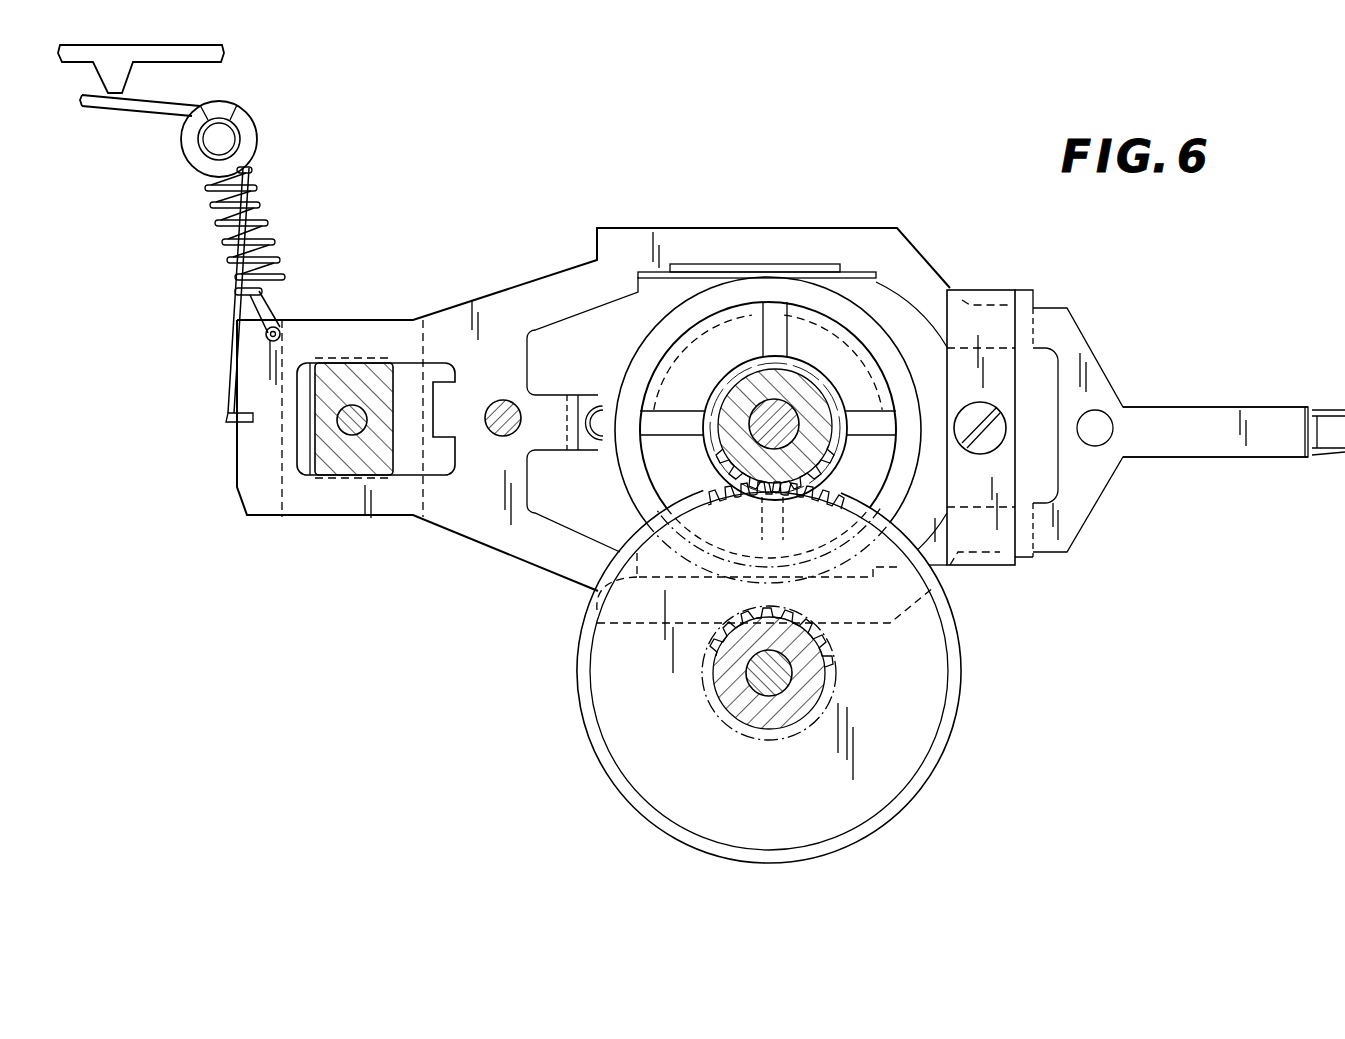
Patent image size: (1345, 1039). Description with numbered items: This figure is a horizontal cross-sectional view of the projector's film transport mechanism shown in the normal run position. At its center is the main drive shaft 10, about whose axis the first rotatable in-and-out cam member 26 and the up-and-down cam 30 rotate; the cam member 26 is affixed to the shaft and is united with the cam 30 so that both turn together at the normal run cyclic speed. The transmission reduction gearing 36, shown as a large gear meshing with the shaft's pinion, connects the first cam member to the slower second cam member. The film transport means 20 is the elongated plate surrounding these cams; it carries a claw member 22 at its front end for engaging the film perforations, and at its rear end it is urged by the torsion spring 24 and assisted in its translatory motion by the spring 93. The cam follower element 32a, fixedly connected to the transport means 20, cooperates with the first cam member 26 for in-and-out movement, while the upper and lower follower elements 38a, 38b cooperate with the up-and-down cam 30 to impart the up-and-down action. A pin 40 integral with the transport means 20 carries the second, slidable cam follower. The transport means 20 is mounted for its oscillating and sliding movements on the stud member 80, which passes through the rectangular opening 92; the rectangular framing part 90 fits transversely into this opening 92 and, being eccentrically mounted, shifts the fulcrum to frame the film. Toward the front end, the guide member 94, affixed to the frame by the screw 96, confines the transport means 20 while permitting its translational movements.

The main drive shaft 10 is at (778, 424).
The film transport means 20 is at (907, 272).
The claw member 22 is at (1323, 407).
The torsion spring 24 is at (147, 107).
The first rotatable in-and-out cam member 26 is at (863, 372).
The up-and-down cam 30 is at (740, 290).
The cam follower element 32a is at (597, 400).
The transmission reduction gearing 36 is at (807, 622).
The upper follower element 38a is at (820, 276).
The lower follower element 38b is at (588, 603).
The pin 40 is at (503, 401).
The stud member 80 is at (352, 408).
The framing part 90 is at (330, 467).
The opening 92 is at (303, 443).
The spring 93 is at (265, 220).
The guide member 94 is at (1007, 390).
The screw 96 is at (980, 455).